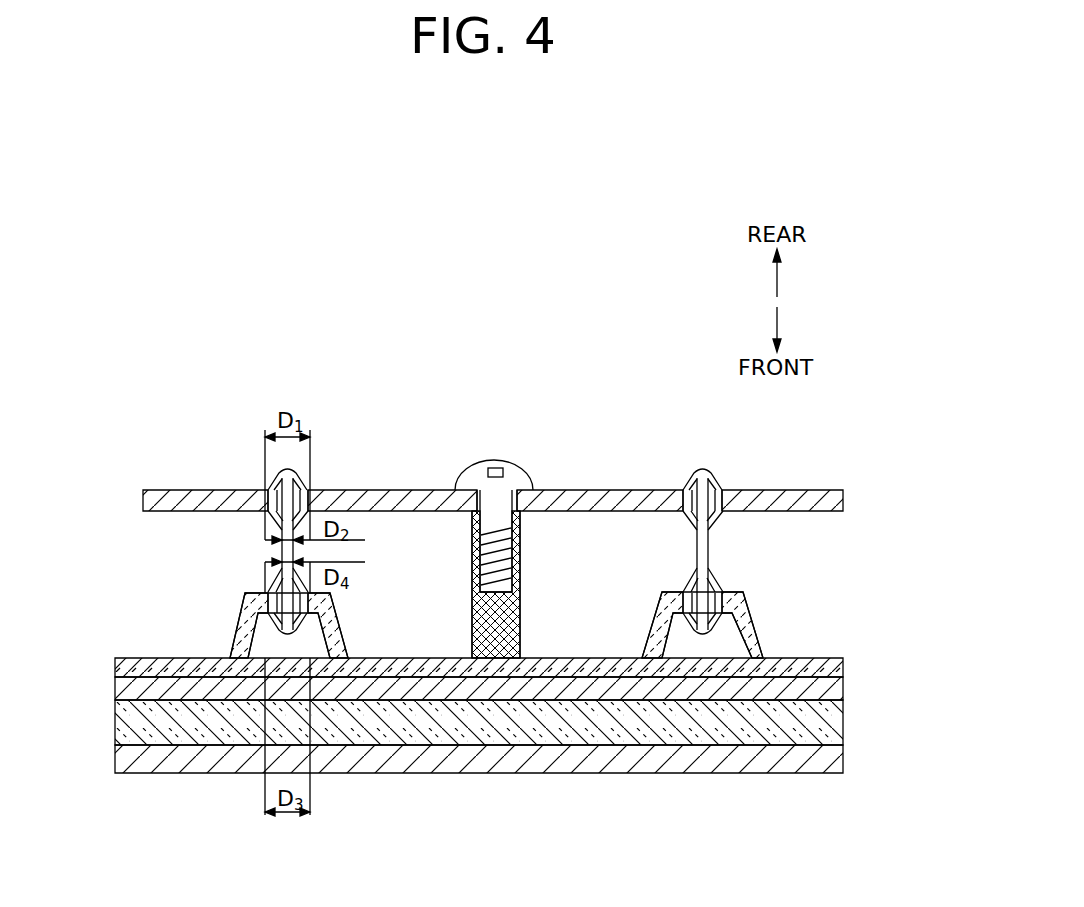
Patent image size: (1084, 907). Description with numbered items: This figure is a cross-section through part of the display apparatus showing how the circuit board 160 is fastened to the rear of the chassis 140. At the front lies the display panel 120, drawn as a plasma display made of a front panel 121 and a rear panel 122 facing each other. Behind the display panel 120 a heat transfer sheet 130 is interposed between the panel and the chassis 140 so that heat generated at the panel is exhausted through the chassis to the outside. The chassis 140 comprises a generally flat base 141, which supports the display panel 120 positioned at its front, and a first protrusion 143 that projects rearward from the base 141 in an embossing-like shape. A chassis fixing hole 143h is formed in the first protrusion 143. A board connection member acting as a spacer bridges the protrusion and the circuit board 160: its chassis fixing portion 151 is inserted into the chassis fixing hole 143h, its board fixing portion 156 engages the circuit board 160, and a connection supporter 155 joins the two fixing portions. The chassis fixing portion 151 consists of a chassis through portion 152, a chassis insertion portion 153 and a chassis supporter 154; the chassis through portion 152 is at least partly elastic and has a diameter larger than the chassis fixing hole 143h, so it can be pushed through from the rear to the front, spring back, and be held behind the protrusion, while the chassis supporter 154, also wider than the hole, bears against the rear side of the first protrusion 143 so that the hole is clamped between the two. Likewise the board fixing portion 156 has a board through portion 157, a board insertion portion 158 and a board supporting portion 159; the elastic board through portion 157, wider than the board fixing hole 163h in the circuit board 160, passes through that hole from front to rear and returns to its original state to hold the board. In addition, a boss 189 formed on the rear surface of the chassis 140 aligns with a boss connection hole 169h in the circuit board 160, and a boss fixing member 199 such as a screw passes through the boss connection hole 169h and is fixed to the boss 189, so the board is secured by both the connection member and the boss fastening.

The display panel 120 is at (479, 785).
The front panel 121 is at (698, 832).
The rear panel 122 is at (692, 733).
The heat transfer sheet 130 is at (589, 692).
The chassis 140 is at (527, 616).
The base 141 is at (822, 664).
The first protrusion 143 is at (730, 606).
The chassis fixing hole 143h is at (719, 603).
The chassis fixing portion 151 is at (195, 602).
The chassis through portion 152 is at (268, 614).
The chassis insertion portion 153 is at (284, 601).
The chassis supporter 154 is at (268, 584).
The connection supporter 155 is at (283, 553).
The board fixing portion 156 is at (195, 465).
The board through portion 157 is at (268, 489).
The board insertion portion 158 is at (268, 498).
The board supporting portion 159 is at (280, 504).
The circuit board 160 is at (493, 459).
The rear cover hole 163h is at (721, 489).
The boss connection hole 169h is at (477, 494).
The boss 189 is at (521, 605).
The boss fixing member 199 is at (516, 473).